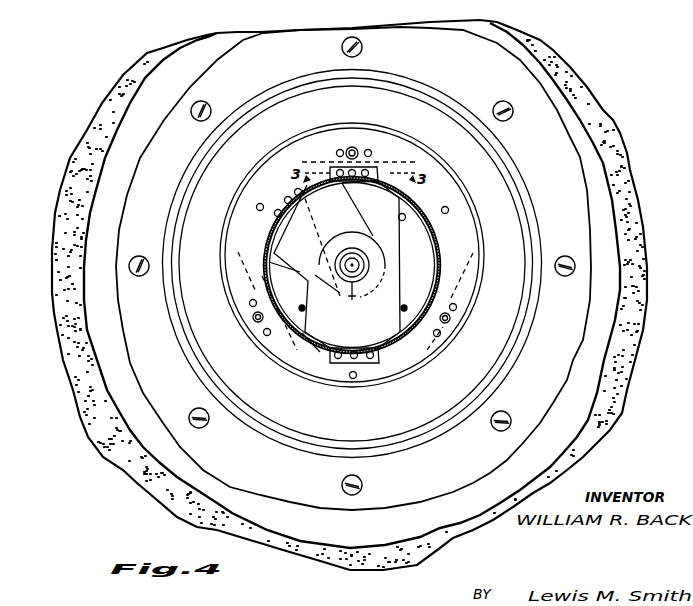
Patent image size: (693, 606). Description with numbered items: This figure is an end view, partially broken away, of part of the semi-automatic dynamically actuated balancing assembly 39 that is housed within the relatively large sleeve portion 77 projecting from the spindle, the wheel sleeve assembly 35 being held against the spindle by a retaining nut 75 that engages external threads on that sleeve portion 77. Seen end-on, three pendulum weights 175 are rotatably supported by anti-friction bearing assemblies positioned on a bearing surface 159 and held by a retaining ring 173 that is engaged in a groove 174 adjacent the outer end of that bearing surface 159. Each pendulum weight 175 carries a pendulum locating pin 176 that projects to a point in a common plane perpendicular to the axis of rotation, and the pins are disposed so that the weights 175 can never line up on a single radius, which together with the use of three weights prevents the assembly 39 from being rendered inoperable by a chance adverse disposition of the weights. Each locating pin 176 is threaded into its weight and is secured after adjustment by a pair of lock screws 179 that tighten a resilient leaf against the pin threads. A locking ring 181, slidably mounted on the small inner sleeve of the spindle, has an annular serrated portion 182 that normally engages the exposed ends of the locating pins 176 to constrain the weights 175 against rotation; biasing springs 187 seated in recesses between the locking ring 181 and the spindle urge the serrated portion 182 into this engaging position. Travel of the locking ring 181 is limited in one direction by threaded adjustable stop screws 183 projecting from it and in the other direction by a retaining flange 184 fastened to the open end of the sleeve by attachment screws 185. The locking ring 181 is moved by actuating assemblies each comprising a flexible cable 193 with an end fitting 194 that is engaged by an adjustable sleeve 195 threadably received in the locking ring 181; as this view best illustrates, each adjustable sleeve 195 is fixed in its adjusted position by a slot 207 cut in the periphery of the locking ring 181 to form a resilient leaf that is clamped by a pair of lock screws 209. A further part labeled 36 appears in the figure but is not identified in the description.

The wheel sleeve assembly 35 is at (518, 200).
The casing 36 is at (644, 317).
The semi-automatic dynamically actuated balancing assembly 39 is at (264, 230).
The retaining nut 75 is at (472, 157).
The relatively large sleeve portion 77 is at (428, 372).
The bearing surface 159 is at (367, 263).
The retaining ring 173 is at (374, 269).
The groove 174 is at (352, 300).
The pendulum weight 175 is at (359, 255).
The pendulum locating pin 176 is at (368, 168).
The lock screws 179 is at (337, 151).
The locking ring 181 is at (435, 193).
The serrated portion 182 is at (438, 238).
The adjustable stop screws 183 is at (256, 206).
The retaining flange 184 is at (285, 267).
The attachment screws 185 is at (309, 349).
The biasing springs 187 is at (345, 181).
The flexible cable 193 is at (328, 150).
The end fitting 194 is at (350, 147).
The adjustable sleeve 195 is at (356, 147).
The slot 207 is at (380, 172).
The lock screws 209 is at (370, 150).